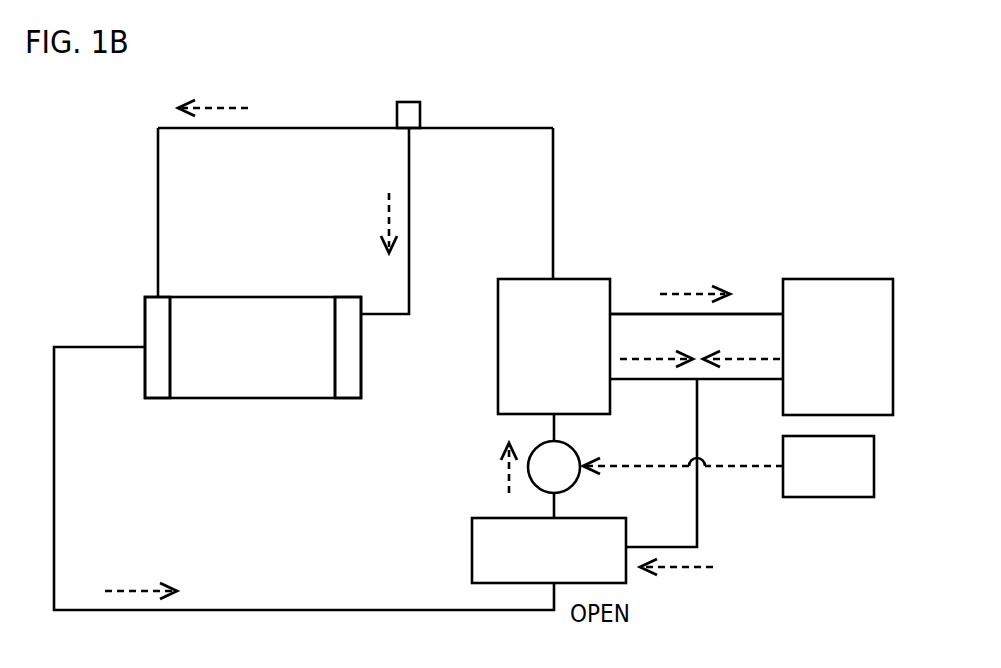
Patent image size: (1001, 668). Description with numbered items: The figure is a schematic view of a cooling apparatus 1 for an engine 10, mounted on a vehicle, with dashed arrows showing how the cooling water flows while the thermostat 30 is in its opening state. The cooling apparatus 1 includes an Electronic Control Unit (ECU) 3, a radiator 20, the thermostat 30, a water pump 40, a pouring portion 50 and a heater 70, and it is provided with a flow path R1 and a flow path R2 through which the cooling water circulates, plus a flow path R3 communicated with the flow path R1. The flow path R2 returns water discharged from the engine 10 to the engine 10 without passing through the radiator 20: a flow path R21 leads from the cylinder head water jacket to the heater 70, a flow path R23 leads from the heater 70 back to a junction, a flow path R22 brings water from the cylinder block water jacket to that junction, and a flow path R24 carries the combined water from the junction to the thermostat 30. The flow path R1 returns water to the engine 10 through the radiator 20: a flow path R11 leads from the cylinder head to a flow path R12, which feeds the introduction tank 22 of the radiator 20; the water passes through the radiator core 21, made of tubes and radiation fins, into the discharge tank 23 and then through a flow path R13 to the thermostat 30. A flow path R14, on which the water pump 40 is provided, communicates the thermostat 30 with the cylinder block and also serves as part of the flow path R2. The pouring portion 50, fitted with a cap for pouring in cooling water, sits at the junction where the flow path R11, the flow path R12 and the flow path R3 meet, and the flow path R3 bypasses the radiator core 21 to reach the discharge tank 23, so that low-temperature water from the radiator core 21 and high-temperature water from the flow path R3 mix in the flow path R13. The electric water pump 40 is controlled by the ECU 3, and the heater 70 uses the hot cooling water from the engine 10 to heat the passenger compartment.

The cooling apparatus 1 is at (880, 236).
The Electronic Control Unit (ECU) 3 is at (874, 466).
The engine 10 is at (603, 279).
The radiator 20 is at (291, 296).
The radiator core 21 is at (224, 310).
The introduction tank 22 is at (361, 384).
The discharge tank 23 is at (145, 312).
The thermostat 30 is at (626, 531).
The water pump 40 is at (575, 486).
The pouring portion 50 is at (410, 102).
The heater 70 is at (893, 304).
The flow path R1 is at (518, 110).
The flow path R11 is at (553, 150).
The flow path R12 is at (409, 270).
The flow path R13 is at (368, 610).
The flow path R14 is at (554, 426).
The flow path R2 is at (782, 249).
The flow path R21 is at (747, 314).
The flow path R22 is at (668, 379).
The flow path R23 is at (755, 379).
The flow path R24 is at (697, 531).
The flow path R3 is at (158, 183).